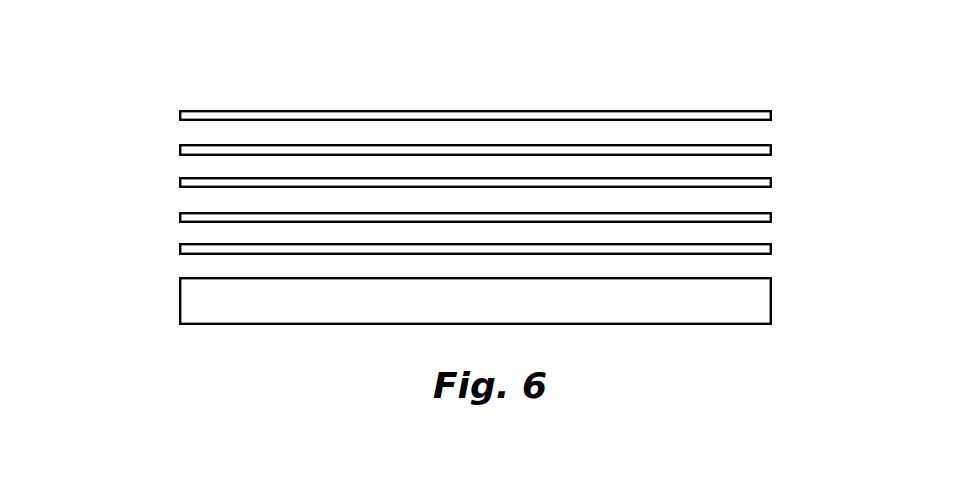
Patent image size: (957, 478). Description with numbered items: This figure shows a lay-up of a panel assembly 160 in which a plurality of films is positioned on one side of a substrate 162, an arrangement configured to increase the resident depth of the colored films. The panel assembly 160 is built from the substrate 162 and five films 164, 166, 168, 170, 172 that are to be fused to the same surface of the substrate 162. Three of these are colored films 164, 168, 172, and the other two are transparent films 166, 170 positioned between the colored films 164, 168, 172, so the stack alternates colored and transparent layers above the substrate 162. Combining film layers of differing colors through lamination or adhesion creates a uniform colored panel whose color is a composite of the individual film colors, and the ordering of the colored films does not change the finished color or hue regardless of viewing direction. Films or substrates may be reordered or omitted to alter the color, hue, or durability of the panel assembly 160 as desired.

The panel assembly 160 is at (135, 90).
The substrate 162 is at (778, 298).
The colored film 164 is at (778, 115).
The transparent film 166 is at (168, 148).
The colored film 168 is at (778, 182).
The transparent film 170 is at (168, 215).
The colored film 172 is at (778, 249).